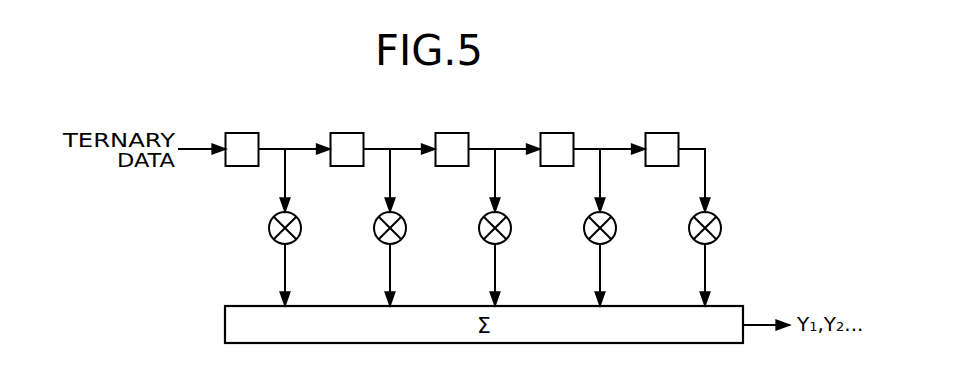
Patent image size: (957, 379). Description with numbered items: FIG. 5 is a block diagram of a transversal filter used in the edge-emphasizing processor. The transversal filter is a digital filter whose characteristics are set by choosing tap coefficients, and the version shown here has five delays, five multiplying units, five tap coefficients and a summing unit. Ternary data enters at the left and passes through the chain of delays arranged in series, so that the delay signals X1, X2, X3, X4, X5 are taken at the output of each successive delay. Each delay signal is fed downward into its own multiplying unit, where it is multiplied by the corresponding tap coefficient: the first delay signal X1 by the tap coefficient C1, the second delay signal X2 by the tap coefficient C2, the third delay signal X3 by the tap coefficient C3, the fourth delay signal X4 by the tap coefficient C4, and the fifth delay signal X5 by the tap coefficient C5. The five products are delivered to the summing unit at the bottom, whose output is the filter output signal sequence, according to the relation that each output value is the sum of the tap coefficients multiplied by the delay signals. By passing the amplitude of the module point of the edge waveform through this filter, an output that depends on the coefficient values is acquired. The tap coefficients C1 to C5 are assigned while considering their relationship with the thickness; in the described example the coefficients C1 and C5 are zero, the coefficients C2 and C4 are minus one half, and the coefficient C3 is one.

The delay signal X1 is at (278, 160).
The delay signal X2 is at (383, 160).
The delay signal X3 is at (488, 160).
The delay signal X4 is at (593, 160).
The delay signal X5 is at (678, 160).
The tap coefficient C1 is at (269, 228).
The tap coefficient C2 is at (374, 228).
The tap coefficient C3 is at (479, 228).
The tap coefficient C4 is at (584, 228).
The tap coefficient C5 is at (689, 228).